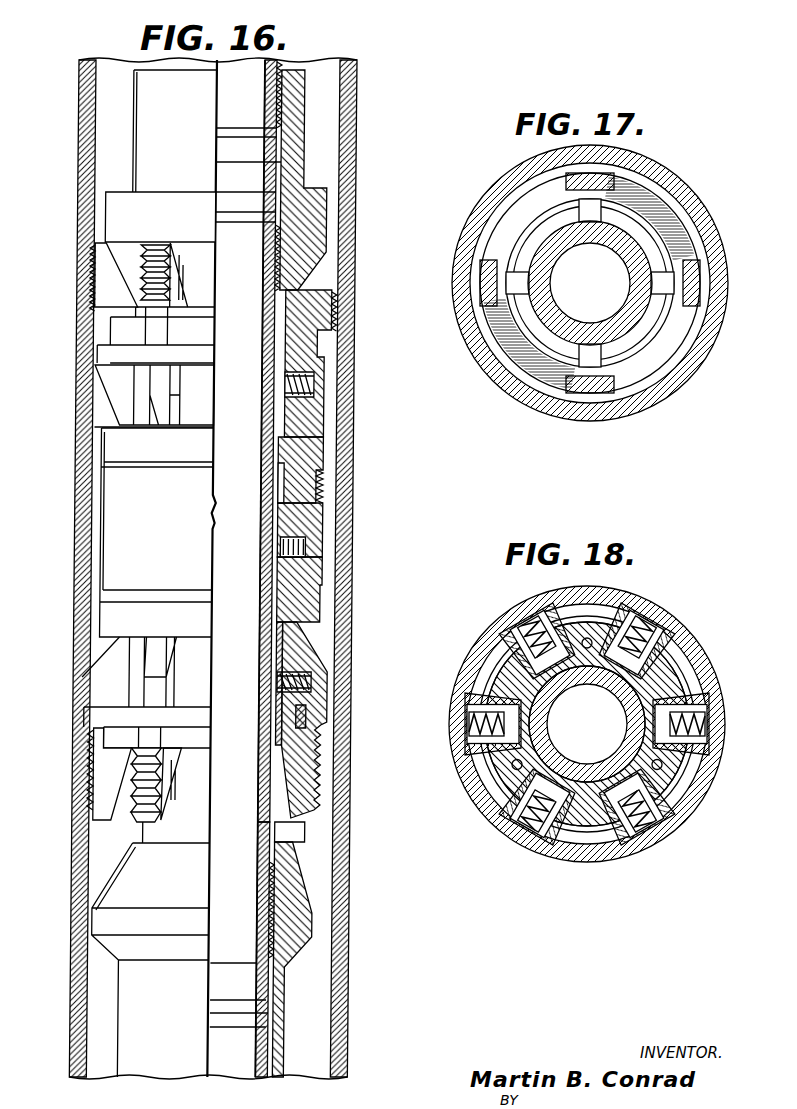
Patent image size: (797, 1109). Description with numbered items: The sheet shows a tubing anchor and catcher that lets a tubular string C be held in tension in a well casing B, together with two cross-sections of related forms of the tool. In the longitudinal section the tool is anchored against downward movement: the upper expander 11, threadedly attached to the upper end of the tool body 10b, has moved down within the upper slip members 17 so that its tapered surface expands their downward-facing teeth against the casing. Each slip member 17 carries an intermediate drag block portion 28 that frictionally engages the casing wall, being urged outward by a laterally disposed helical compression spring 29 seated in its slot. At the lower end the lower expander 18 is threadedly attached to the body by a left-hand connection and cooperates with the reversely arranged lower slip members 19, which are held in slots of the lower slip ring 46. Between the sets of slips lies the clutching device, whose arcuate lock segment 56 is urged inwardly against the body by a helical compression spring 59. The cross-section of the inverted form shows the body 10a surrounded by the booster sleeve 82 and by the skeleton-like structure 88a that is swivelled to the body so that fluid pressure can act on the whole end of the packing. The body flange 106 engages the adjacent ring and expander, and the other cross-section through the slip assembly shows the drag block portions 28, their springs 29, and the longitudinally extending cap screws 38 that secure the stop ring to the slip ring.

In FIG. 16, the well casing B is at (79, 119).
In FIG. 17, the well casing B is at (716, 338).
In FIG. 18, the well casing B is at (612, 848).
In FIG. 16, the tubular string C is at (268, 82).
In FIG. 16, the upper expander 11 is at (318, 232).
In FIG. 16, the upper slip members 17 is at (98, 297).
In FIG. 18, the upper slip members 17 is at (645, 632).
In FIG. 16, the drag block portion 28 is at (160, 383).
In FIG. 18, the drag block portion 28 is at (540, 630).
In FIG. 16, the lock segment 56 is at (284, 544).
In FIG. 16, the helical compression spring 59 is at (312, 544).
In FIG. 16, the lower slip ring 46 is at (281, 650).
In FIG. 16, the lower slip members 19 is at (106, 795).
In FIG. 16, the tool body 10b is at (306, 833).
In FIG. 16, the flange 106 is at (290, 857).
In FIG. 18, the flange 106 is at (630, 690).
In FIG. 16, the lower expander 18 is at (307, 892).
In FIG. 17, the skeleton-like structure 88a is at (652, 206).
In FIG. 17, the body 10a is at (556, 250).
In FIG. 17, the booster sleeve 82 is at (532, 323).
In FIG. 18, the helical compression springs 29 is at (545, 640).
In FIG. 18, the cap screws 38 is at (594, 640).